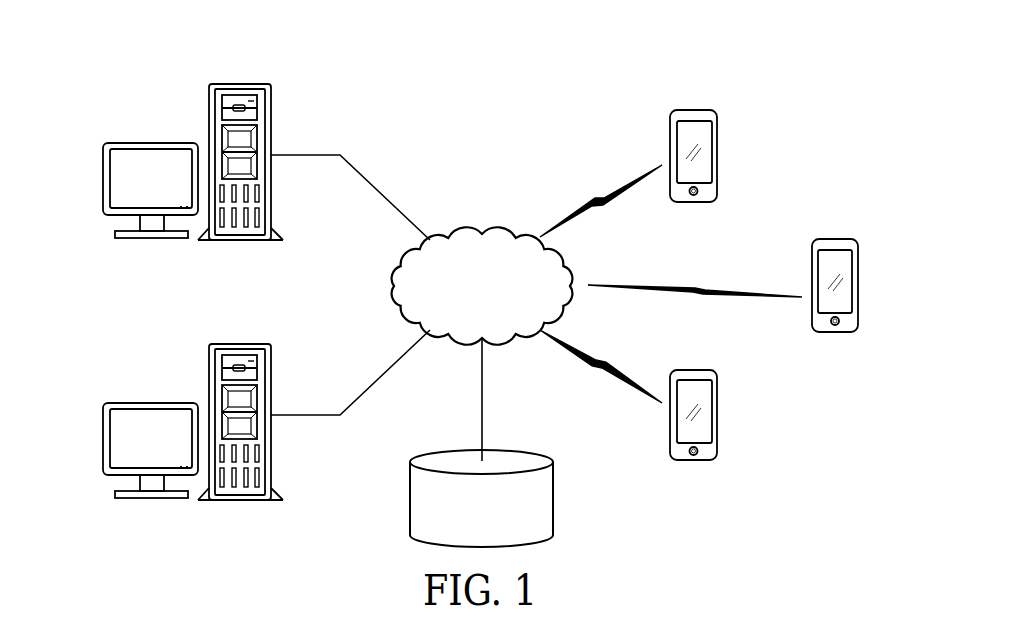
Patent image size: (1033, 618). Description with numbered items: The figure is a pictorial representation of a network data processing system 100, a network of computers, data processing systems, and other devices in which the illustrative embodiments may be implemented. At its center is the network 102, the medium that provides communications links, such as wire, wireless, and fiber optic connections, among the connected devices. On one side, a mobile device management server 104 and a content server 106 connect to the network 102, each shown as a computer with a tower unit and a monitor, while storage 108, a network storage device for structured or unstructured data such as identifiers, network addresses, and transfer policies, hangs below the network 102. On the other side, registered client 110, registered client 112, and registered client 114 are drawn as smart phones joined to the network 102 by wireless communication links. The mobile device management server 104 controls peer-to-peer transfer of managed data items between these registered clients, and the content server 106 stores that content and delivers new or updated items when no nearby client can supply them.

The network data processing system 100 is at (344, 60).
The network 102 is at (455, 232).
The mobile device management server 104 is at (103, 181).
The content server 106 is at (103, 437).
The storage 108 is at (410, 498).
The registered client 110 is at (717, 155).
The registered client 112 is at (858, 285).
The registered client 114 is at (717, 430).